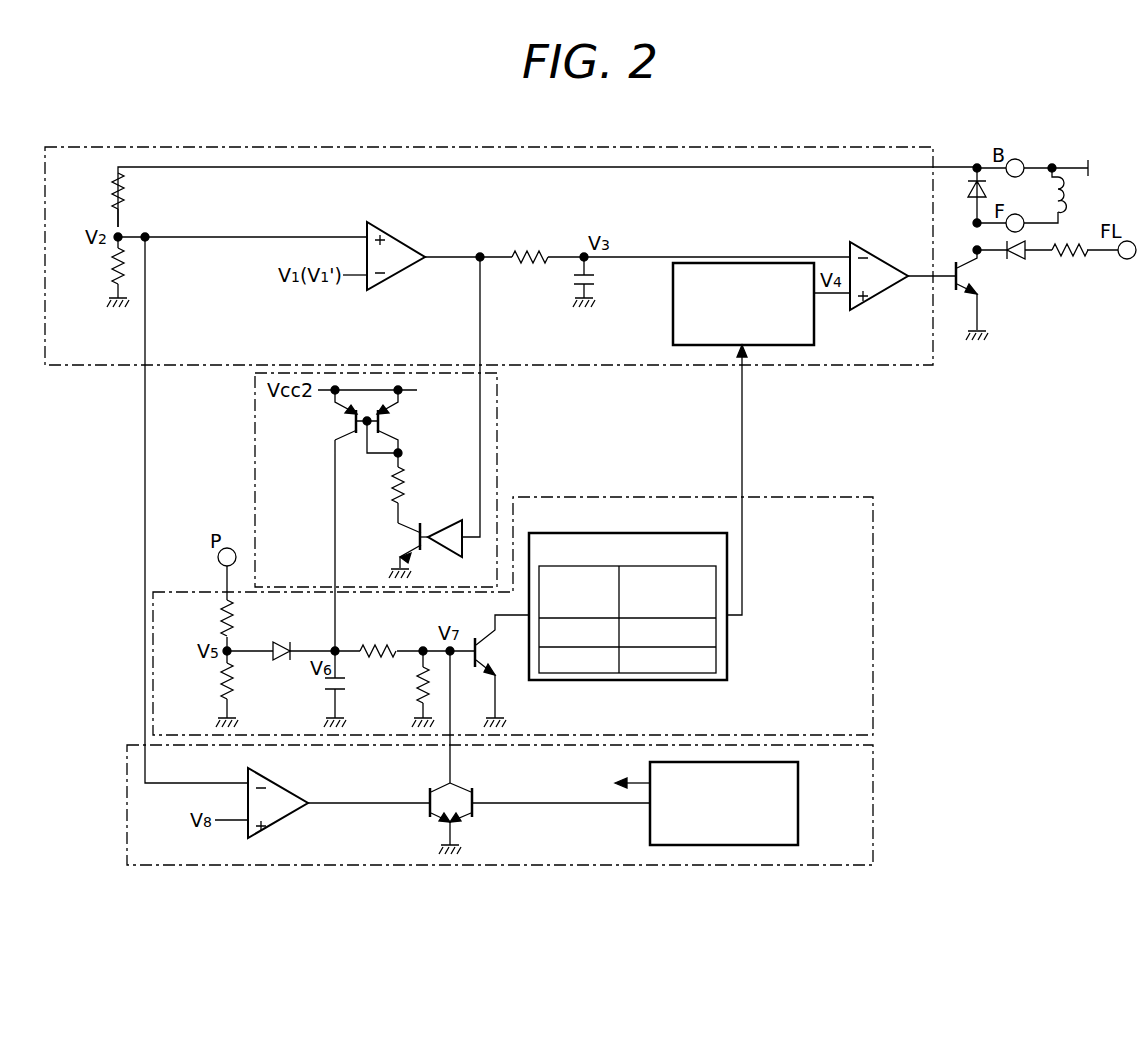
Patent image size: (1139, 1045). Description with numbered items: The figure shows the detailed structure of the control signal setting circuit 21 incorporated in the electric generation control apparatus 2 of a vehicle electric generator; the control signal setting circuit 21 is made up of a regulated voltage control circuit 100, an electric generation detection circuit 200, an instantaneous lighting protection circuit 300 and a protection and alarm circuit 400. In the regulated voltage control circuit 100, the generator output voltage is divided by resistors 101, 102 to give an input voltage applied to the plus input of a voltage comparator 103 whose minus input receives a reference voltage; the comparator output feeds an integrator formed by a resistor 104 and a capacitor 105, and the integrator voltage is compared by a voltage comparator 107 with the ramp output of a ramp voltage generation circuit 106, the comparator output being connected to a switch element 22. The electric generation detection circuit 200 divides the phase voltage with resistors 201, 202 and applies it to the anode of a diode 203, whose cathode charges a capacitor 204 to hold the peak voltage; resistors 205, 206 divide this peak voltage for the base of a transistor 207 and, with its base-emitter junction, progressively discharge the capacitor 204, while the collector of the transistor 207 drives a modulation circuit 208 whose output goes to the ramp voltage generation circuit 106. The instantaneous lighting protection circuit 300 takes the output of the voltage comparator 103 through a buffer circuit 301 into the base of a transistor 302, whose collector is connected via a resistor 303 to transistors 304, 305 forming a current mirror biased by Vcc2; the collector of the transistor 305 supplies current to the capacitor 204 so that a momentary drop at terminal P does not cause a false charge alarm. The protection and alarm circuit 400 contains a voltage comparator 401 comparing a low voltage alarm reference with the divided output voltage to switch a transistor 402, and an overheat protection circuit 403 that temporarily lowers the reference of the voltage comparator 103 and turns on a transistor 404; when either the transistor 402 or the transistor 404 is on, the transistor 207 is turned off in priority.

The electric generation control apparatus 2 is at (1063, 283).
The control signal setting circuit 21 is at (858, 433).
The switch element 22 is at (972, 287).
The regulated voltage control circuit 100 is at (933, 365).
The resistor 101 is at (117, 202).
The resistor 102 is at (120, 282).
The voltage comparator 103 is at (394, 238).
The resistor 104 is at (530, 250).
The capacitor 105 is at (571, 278).
The ramp voltage generation circuit 106 is at (673, 323).
The voltage comparator 107 is at (870, 248).
The electric generation detection circuit 200 is at (873, 532).
The resistor 201 is at (223, 618).
The resistor 202 is at (223, 692).
The diode 203 is at (280, 641).
The capacitor 204 is at (326, 686).
The resistor 205 is at (380, 643).
The resistor 206 is at (419, 692).
The transistor 207 is at (500, 673).
The modulation circuit 208 is at (727, 652).
The instantaneous lighting protection circuit 300 is at (497, 401).
The buffer circuit 301 is at (454, 525).
The transistor 302 is at (406, 537).
The resistor 303 is at (402, 480).
The transistor 304 is at (390, 421).
The transistor 305 is at (345, 421).
The protection and alarm circuit 400 is at (873, 770).
The voltage comparator 401 is at (282, 788).
The transistor 402 is at (432, 788).
The overheat protection circuit 403 is at (798, 792).
The transistor 404 is at (468, 788).